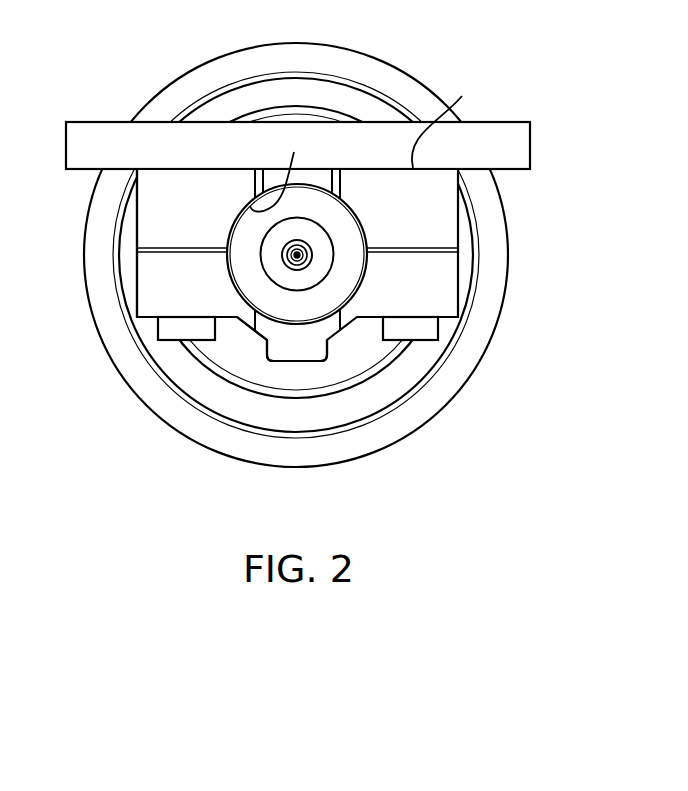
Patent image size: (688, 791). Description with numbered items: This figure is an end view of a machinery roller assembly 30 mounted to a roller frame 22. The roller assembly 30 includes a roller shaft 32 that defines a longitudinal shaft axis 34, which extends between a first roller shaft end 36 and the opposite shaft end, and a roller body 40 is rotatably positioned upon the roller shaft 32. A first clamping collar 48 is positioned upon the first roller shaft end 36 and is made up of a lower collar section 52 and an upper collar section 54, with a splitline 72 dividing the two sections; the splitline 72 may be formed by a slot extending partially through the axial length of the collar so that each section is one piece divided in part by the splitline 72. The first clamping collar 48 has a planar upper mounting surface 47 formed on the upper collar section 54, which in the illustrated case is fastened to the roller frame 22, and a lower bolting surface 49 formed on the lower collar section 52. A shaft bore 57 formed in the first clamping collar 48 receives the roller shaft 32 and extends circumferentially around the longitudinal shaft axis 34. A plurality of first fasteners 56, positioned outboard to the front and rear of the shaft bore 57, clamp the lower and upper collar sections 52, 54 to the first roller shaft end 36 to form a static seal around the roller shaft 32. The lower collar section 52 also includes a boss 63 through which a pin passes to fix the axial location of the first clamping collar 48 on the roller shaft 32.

The roller frame 22 is at (530, 145).
The roller assembly 30 is at (537, 290).
The roller shaft 32 is at (245, 262).
The longitudinal shaft axis 34 is at (291, 262).
The first roller shaft end 36 is at (298, 269).
The roller body 40 is at (478, 371).
The planar upper mounting surface 47 is at (444, 124).
The first clamping collar 48 is at (146, 209).
The lower bolting surface 49 is at (240, 320).
The lower collar section 52 is at (445, 308).
The upper collar section 54 is at (445, 209).
The first fastener 56 is at (178, 340).
The shaft bore 57 is at (286, 171).
The boss 63 is at (291, 362).
The splitline 72 is at (402, 256).